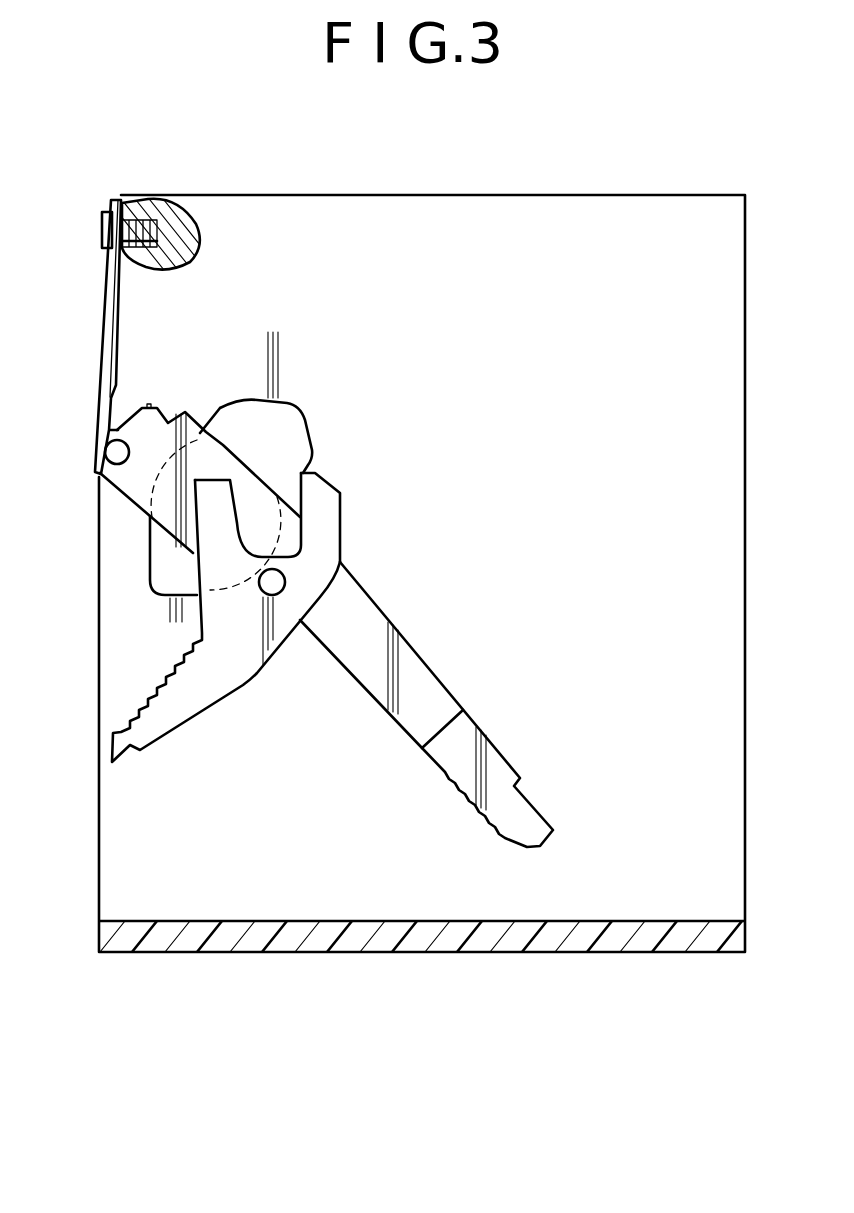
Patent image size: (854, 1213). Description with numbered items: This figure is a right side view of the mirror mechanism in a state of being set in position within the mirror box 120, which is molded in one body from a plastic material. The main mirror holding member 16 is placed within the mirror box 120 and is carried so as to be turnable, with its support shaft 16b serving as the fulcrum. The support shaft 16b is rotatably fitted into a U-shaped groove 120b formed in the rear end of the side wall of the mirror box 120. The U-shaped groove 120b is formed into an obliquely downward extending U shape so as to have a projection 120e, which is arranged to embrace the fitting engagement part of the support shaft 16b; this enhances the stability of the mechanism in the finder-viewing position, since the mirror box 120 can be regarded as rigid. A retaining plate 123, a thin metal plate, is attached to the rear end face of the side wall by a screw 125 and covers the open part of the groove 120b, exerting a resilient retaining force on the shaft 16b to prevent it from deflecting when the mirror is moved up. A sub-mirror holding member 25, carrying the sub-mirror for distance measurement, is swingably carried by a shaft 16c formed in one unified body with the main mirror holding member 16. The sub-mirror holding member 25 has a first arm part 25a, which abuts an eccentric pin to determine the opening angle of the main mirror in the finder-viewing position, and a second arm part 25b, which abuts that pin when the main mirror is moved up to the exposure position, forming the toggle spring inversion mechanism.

The mirror box 120 is at (380, 940).
The U-shaped groove 120b is at (108, 433).
The projection 120e is at (297, 408).
The retaining plate 123 is at (105, 348).
The screw 125 is at (102, 223).
The main mirror holding member 16 is at (362, 668).
The support shaft 16b is at (117, 452).
The shaft 16c is at (273, 585).
The sub-mirror holding member 25 is at (178, 708).
The first arm part 25a is at (213, 495).
The second arm part 25b is at (317, 510).